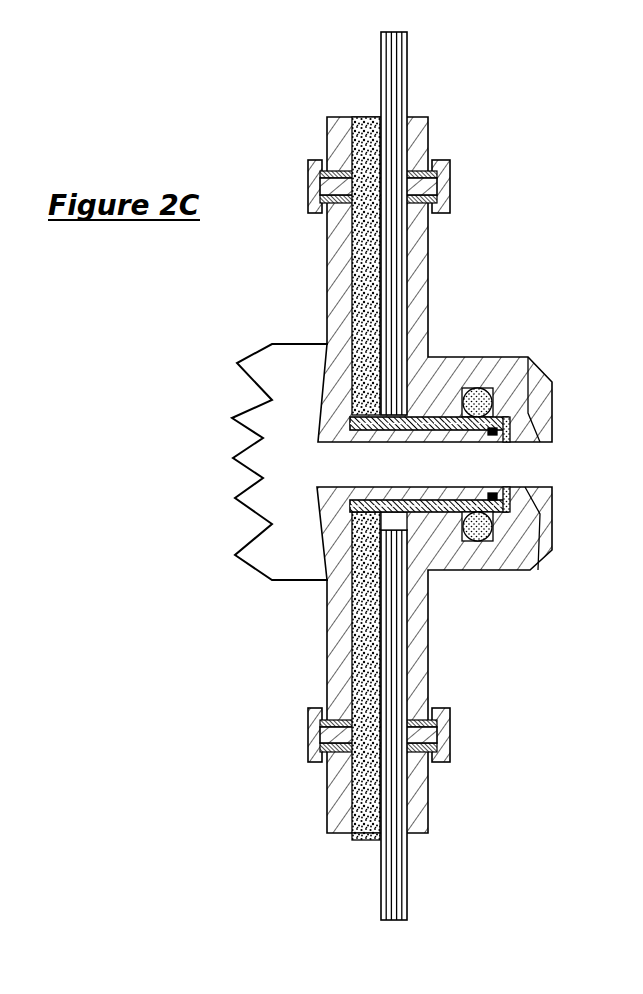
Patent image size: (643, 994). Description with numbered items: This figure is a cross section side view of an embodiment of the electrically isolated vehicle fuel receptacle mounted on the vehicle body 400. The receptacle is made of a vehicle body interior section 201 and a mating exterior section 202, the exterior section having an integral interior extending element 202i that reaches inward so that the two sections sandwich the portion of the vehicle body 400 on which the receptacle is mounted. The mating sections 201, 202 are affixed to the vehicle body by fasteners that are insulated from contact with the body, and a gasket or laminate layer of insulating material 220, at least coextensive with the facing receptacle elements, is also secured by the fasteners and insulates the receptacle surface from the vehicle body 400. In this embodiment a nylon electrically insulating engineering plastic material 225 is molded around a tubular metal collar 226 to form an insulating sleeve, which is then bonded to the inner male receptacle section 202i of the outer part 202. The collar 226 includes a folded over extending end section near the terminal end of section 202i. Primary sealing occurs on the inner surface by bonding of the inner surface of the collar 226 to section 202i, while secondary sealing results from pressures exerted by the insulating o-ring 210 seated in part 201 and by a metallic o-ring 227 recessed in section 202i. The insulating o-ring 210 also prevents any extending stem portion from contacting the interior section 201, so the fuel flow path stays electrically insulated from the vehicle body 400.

The vehicle body interior section 201 is at (420, 688).
The vehicle body exterior section 202 is at (340, 808).
The integral interior extending element 202i is at (451, 349).
The insulating material layer 220 is at (363, 840).
The nylon electrically insulating engineering plastic material 225 is at (510, 507).
The tubular metal collar 226 is at (426, 514).
The metallic o-ring 227 is at (547, 464).
The insulating o-ring 210 is at (480, 521).
The vehicle body 400 is at (395, 893).